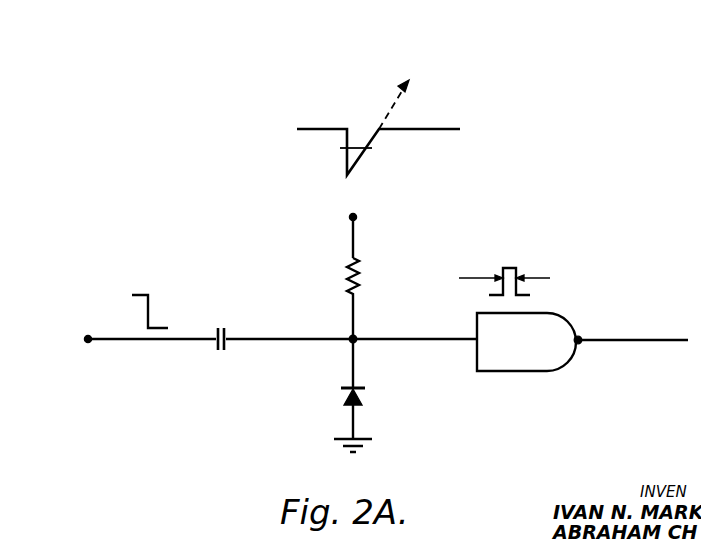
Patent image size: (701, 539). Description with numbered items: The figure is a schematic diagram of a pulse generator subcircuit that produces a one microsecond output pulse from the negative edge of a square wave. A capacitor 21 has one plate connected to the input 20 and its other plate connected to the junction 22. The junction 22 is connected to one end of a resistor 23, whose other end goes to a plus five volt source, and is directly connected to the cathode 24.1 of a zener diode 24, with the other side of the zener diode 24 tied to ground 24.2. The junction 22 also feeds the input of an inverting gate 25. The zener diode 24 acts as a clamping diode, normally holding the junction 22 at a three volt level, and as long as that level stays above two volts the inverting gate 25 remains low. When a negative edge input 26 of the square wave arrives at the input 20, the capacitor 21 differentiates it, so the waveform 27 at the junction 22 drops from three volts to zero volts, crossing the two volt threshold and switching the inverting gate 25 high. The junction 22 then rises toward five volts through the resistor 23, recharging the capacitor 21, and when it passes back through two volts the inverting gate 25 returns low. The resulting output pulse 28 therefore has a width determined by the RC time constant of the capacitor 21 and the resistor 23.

The input 20 is at (88, 336).
The capacitor 21 is at (228, 330).
The junction 22 is at (356, 335).
The resistor 23 is at (357, 268).
The zener diode 24 is at (361, 398).
The cathode 24.1 is at (343, 387).
The ground connection 24.2 is at (356, 420).
The inverting gate 25 is at (548, 372).
The negative edge input 26 is at (150, 307).
The waveform 27 is at (345, 122).
The pulse 28 is at (508, 268).